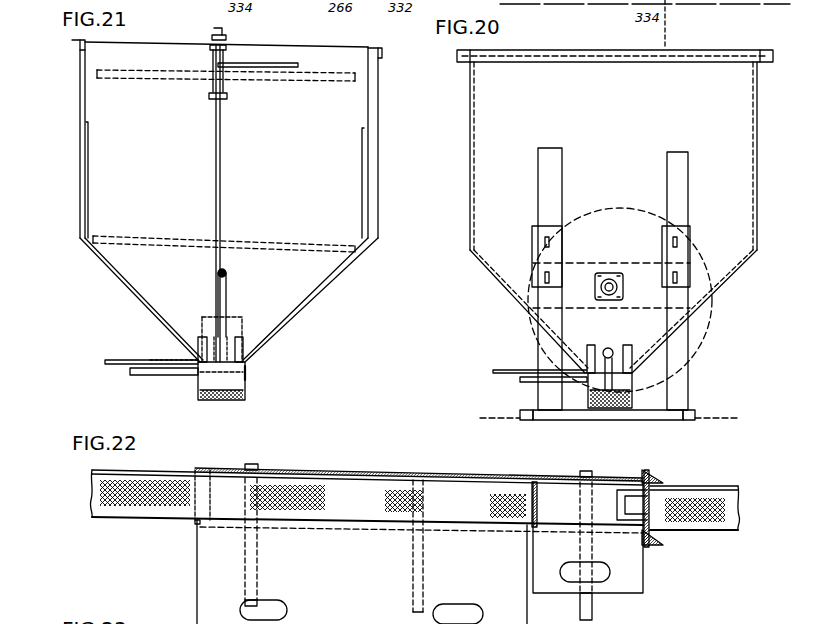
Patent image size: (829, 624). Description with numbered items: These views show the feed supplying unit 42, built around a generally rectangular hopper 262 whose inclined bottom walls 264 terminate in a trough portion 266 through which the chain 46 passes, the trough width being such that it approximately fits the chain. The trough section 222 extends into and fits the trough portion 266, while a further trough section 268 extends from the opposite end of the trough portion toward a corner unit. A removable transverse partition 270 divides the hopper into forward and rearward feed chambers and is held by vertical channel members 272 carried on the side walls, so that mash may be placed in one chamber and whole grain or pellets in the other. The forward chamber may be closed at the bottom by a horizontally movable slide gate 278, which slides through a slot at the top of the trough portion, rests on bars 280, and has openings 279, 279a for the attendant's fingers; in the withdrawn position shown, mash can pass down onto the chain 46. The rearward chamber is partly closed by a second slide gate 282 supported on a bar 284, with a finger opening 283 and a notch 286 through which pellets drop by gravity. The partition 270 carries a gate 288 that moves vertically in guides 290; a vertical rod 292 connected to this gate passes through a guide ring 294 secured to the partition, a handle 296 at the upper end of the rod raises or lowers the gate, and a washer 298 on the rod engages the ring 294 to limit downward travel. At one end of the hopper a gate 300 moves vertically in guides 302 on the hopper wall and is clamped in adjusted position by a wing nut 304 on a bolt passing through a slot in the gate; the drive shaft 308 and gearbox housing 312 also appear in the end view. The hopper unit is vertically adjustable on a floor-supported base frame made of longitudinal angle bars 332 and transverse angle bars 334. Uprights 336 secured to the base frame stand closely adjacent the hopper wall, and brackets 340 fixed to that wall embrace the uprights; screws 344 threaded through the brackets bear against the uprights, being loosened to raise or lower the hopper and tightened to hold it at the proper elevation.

In FIG. 20, the feed supplying unit 42 is at (468, 202).
In FIG. 21, the chain 46 is at (218, 400).
In FIG. 22, the chain 46 is at (97, 490).
In FIG. 22, the trough section 222 is at (170, 474).
In FIG. 21, the hopper 262 is at (378, 104).
In FIG. 20, the hopper 262 is at (470, 170).
In FIG. 21, the inclined bottom walls 264 is at (130, 292).
In FIG. 20, the inclined bottom walls 264 is at (500, 296).
In FIG. 21, the trough portion 266 is at (246, 392).
In FIG. 22, the trough portion 266 is at (285, 470).
In FIG. 20, the trough section 268 is at (640, 397).
In FIG. 22, the trough section 268 is at (704, 487).
In FIG. 21, the transverse partition 270 is at (303, 145).
In FIG. 21, the vertical channel members 272 is at (89, 174).
In FIG. 21, the slide gate 278 is at (105, 361).
In FIG. 20, the slide gate 278 is at (493, 371).
In FIG. 22, the slide gate 278 is at (197, 574).
In FIG. 22, the opening 279 is at (285, 612).
In FIG. 22, the opening 279a is at (480, 615).
In FIG. 22, the bars 280 is at (257, 580).
In FIG. 21, the slide gate 282 is at (174, 360).
In FIG. 20, the slide gate 282 is at (565, 370).
In FIG. 22, the slide gate 282 is at (645, 570).
In FIG. 22, the opening 283 is at (604, 576).
In FIG. 21, the bar 284 is at (135, 373).
In FIG. 20, the bar 284 is at (520, 380).
In FIG. 22, the bar 284 is at (593, 612).
In FIG. 22, the notch 286 is at (628, 496).
In FIG. 21, the gate 288 is at (247, 376).
In FIG. 22, the gate 288 is at (538, 508).
In FIG. 21, the guides 290 is at (200, 340).
In FIG. 21, the vertical rod 292 is at (221, 190).
In FIG. 21, the guide ring 294 is at (227, 96).
In FIG. 21, the handle 296 is at (262, 64).
In FIG. 21, the washer 298 is at (211, 96).
In FIG. 20, the gate 300 is at (636, 384).
In FIG. 22, the gate 300 is at (650, 497).
In FIG. 20, the guides 302 is at (590, 345).
In FIG. 20, the wing nut 304 is at (609, 348).
In FIG. 21, the drive shaft / gearbox 308 is at (229, 275).
In FIG. 20, the drive shaft / gearbox 308 is at (611, 283).
In FIG. 20, the gearbox housing 312 is at (637, 299).
In FIG. 20, the longitudinal angle bars 332 is at (520, 414).
In FIG. 20, the transverse angle bars 334 is at (652, 421).
In FIG. 20, the uprights 336 is at (540, 186).
In FIG. 20, the brackets 340 is at (533, 234).
In FIG. 20, the screws 344 is at (545, 276).